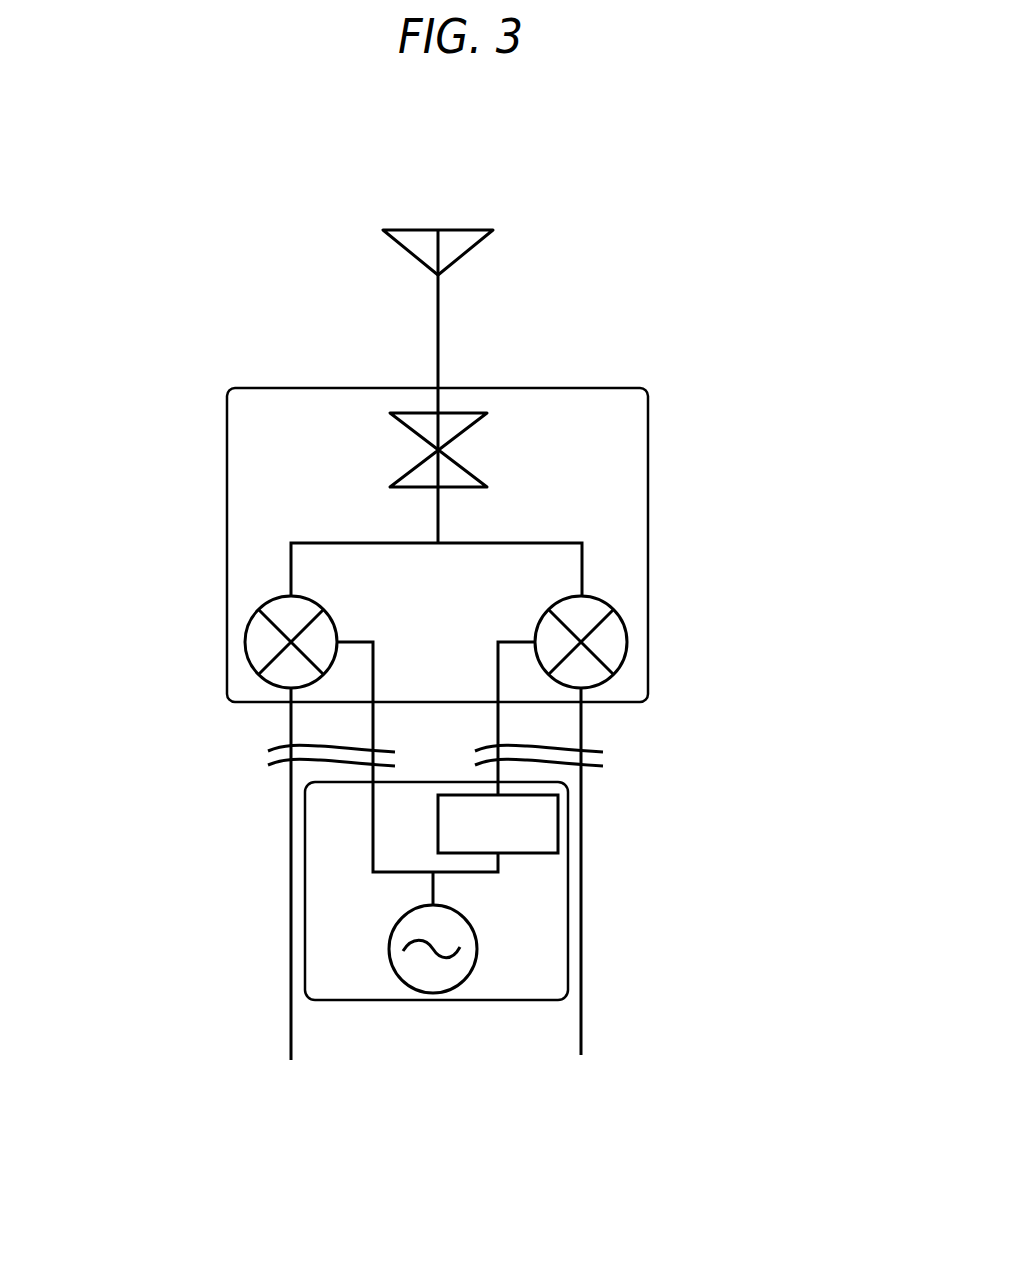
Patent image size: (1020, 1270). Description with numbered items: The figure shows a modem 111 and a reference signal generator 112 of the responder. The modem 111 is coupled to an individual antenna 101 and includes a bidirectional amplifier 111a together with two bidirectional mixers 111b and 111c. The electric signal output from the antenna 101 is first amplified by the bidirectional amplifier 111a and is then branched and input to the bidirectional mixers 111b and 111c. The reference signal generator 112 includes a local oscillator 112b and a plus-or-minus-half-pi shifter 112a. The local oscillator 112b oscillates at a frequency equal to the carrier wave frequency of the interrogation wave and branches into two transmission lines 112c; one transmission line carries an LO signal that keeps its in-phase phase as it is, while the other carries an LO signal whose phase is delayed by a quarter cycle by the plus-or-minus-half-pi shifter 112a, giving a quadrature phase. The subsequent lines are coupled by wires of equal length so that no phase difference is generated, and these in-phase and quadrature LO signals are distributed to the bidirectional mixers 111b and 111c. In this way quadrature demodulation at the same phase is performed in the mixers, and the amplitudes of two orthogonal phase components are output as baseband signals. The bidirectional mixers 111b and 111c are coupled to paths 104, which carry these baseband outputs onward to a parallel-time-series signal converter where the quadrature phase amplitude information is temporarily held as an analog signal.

The antenna 101 is at (457, 230).
The modem 111 is at (648, 442).
The bidirectional amplifier 111a is at (407, 412).
The bidirectional mixer 111b is at (243, 633).
The bidirectional mixer 111c is at (628, 640).
The reference signal generator 112 is at (568, 874).
The ±π/2 shifter 112a is at (558, 812).
The local oscillator 112b is at (387, 938).
The transmission lines 112c is at (490, 863).
The paths 104 is at (292, 973).